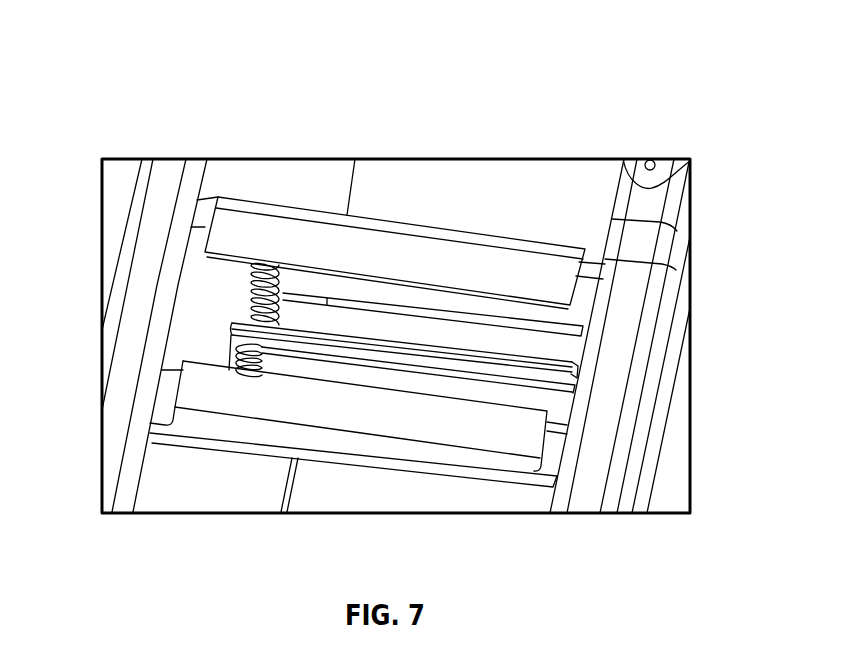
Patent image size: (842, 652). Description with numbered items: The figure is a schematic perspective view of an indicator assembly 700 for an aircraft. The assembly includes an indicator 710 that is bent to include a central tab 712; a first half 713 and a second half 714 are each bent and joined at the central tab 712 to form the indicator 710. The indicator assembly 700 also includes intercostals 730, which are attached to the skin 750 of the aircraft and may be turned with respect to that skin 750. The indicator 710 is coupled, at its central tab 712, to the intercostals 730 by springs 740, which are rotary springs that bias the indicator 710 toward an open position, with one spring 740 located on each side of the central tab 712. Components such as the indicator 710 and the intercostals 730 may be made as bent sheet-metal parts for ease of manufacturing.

The indicator assembly 700 is at (533, 70).
The indicator 710 is at (578, 347).
The central tab 712 is at (560, 414).
The first half 713 is at (578, 358).
The second half 714 is at (565, 376).
The intercostals 730 is at (549, 262).
The springs 740 is at (245, 290).
The skin 750 is at (345, 490).